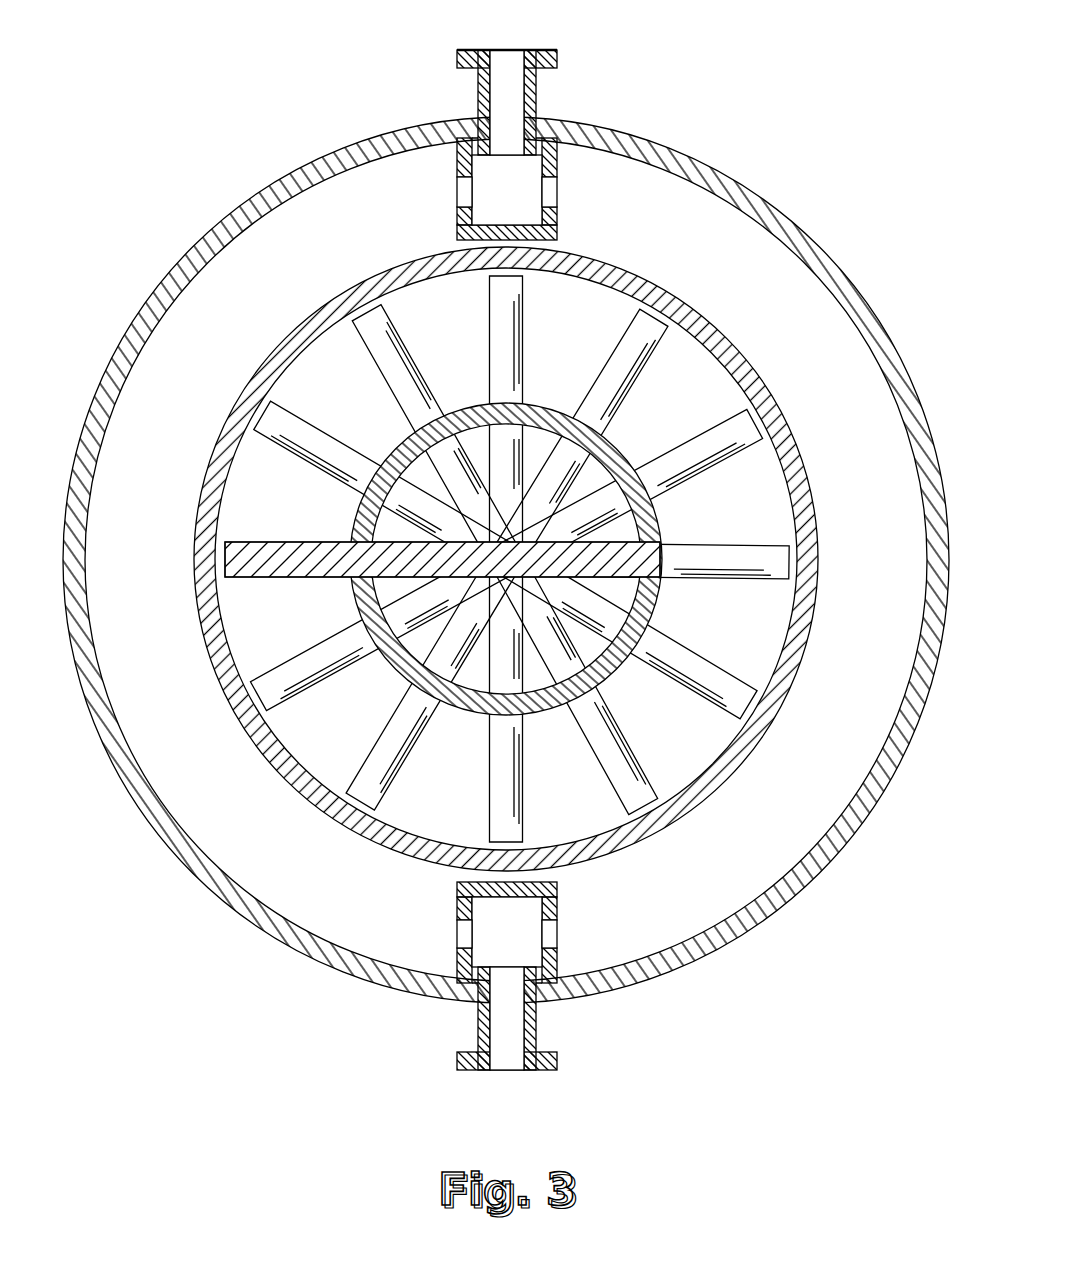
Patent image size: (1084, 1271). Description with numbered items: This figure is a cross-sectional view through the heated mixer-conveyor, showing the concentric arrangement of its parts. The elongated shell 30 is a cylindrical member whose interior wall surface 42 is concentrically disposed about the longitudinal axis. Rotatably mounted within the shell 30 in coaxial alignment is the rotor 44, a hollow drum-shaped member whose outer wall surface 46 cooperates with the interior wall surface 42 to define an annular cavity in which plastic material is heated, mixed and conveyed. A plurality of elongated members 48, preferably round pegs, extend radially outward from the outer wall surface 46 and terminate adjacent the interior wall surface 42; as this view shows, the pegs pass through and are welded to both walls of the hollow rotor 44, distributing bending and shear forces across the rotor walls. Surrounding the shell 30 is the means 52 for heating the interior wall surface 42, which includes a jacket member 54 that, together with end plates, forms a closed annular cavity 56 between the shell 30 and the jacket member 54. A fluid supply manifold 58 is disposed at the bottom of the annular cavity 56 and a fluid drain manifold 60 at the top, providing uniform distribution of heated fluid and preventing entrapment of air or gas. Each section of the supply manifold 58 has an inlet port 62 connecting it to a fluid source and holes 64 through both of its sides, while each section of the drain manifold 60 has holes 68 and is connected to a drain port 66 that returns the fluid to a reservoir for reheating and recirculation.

The elongated shell 30 is at (510, 560).
The interior wall surface 42 is at (730, 748).
The rotor 44 is at (392, 658).
The outer wall surface 46 is at (453, 714).
The elongated members 48 is at (678, 488).
The means for heating 52 is at (547, 1000).
The jacket member 54 is at (700, 965).
The annular cavity 56 is at (510, 560).
The fluid supply manifold 58 is at (509, 932).
The fluid drain manifold 60 is at (516, 197).
The inlet port 62 is at (478, 1070).
The holes 64 is at (562, 958).
The drain port 66 is at (538, 50).
The holes 68 is at (552, 190).